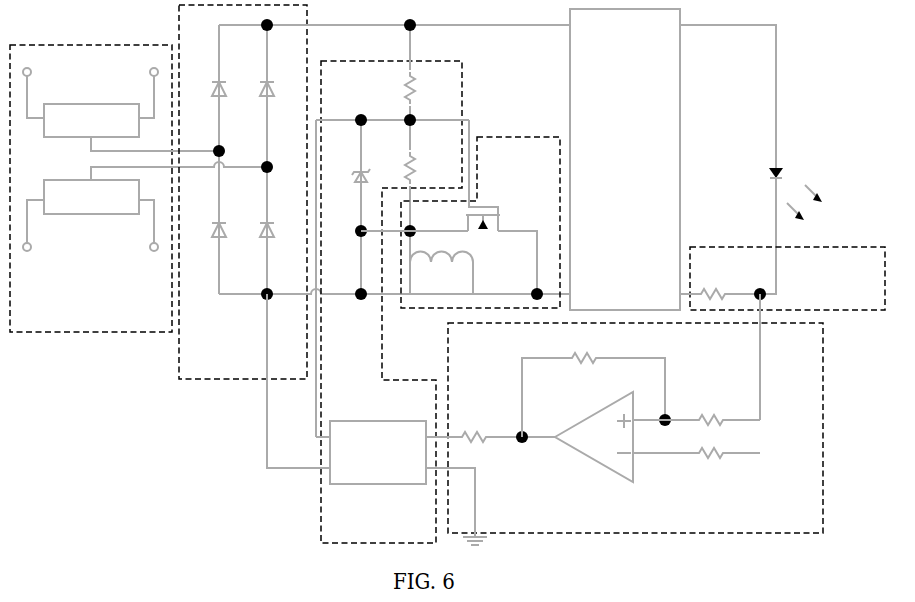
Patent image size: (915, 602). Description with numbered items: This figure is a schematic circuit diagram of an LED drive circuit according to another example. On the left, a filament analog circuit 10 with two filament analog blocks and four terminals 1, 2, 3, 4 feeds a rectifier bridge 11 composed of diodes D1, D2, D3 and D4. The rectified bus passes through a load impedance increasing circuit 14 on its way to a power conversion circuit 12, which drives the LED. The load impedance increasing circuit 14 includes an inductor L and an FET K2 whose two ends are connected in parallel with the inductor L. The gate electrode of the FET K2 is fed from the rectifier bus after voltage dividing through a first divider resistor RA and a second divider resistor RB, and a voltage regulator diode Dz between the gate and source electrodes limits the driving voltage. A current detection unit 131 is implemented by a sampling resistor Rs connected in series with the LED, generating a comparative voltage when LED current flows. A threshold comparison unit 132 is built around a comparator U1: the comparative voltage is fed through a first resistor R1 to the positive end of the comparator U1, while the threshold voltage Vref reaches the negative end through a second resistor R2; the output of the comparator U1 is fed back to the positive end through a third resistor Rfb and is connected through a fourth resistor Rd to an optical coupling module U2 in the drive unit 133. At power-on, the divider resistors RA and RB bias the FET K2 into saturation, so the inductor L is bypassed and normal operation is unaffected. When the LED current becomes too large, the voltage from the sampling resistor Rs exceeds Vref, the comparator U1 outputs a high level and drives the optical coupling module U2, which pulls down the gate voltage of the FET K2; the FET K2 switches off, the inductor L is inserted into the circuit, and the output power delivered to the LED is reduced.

The filament terminal 1 is at (36, 89).
The filament terminal 2 is at (143, 89).
The filament terminal 3 is at (37, 231).
The filament terminal 4 is at (143, 231).
The filament analog circuit 10 is at (138, 188).
The rectifier bridge 11 is at (371, 192).
The power conversion circuit 12 is at (625, 159).
The load impedance increasing circuit 14 is at (460, 220).
The current detection unit 131 is at (786, 278).
The threshold comparison unit 132 is at (624, 419).
The drive unit 133 is at (382, 281).
The diode D1 is at (208, 76).
The diode D2 is at (278, 76).
The diode D3 is at (207, 247).
The diode D4 is at (277, 247).
The first divider resistor RA is at (428, 89).
The second divider resistor RB is at (428, 168).
The voltage regulator diode Dz is at (372, 161).
The FET K2 is at (500, 216).
The inductor L is at (441, 273).
The optical coupling module U2 is at (378, 437).
The element LED is at (753, 159).
The sampling resistor Rs is at (720, 278).
The fourth resistor Rd is at (490, 423).
The third resistor Rfb is at (593, 380).
The first resistor R1 is at (696, 405).
The second resistor R2 is at (696, 471).
The comparator U1 is at (594, 440).
The threshold voltage Vref is at (792, 455).